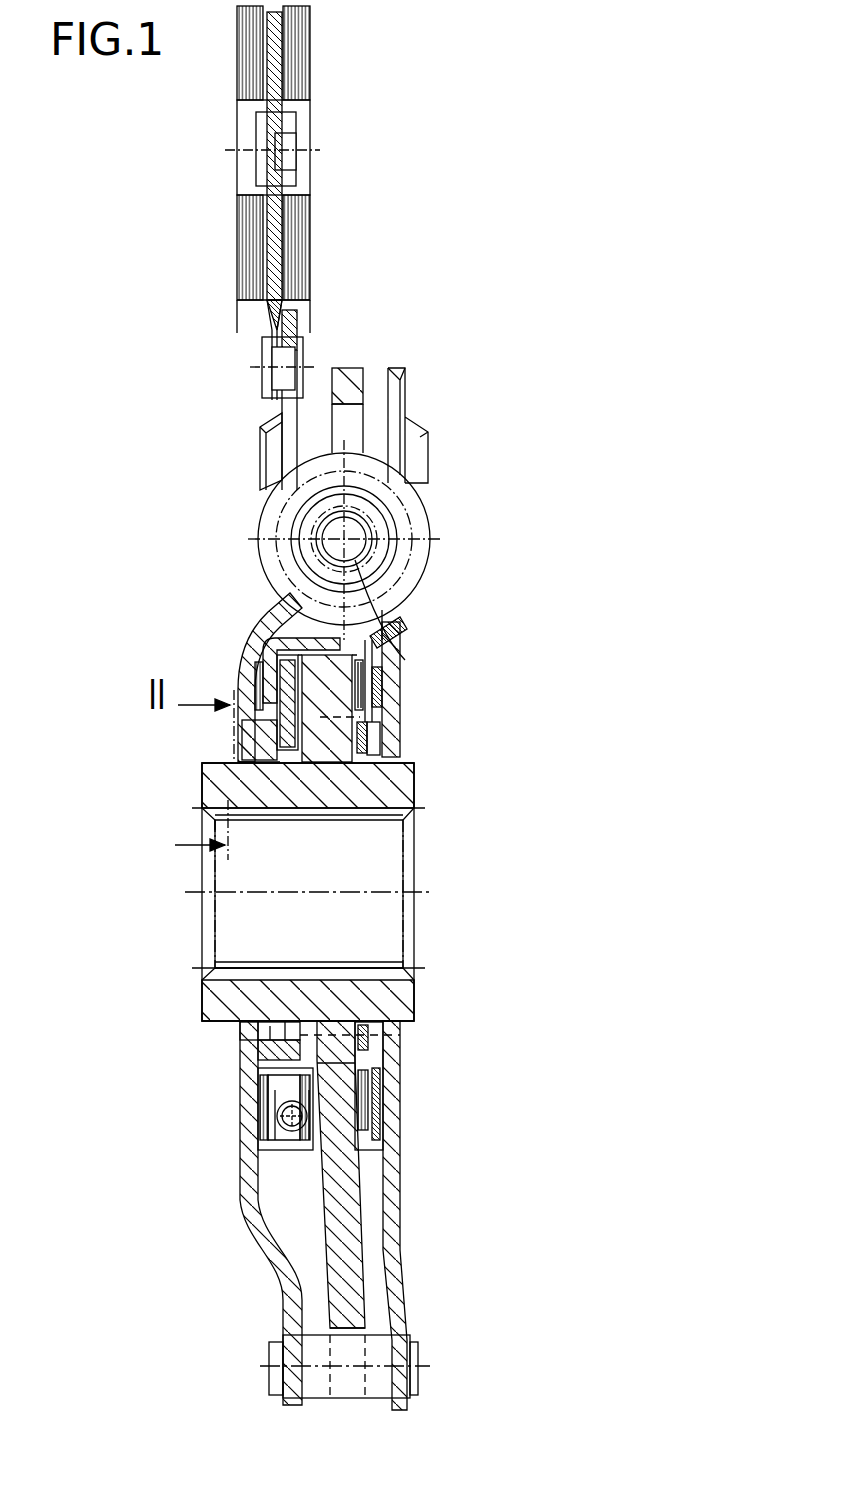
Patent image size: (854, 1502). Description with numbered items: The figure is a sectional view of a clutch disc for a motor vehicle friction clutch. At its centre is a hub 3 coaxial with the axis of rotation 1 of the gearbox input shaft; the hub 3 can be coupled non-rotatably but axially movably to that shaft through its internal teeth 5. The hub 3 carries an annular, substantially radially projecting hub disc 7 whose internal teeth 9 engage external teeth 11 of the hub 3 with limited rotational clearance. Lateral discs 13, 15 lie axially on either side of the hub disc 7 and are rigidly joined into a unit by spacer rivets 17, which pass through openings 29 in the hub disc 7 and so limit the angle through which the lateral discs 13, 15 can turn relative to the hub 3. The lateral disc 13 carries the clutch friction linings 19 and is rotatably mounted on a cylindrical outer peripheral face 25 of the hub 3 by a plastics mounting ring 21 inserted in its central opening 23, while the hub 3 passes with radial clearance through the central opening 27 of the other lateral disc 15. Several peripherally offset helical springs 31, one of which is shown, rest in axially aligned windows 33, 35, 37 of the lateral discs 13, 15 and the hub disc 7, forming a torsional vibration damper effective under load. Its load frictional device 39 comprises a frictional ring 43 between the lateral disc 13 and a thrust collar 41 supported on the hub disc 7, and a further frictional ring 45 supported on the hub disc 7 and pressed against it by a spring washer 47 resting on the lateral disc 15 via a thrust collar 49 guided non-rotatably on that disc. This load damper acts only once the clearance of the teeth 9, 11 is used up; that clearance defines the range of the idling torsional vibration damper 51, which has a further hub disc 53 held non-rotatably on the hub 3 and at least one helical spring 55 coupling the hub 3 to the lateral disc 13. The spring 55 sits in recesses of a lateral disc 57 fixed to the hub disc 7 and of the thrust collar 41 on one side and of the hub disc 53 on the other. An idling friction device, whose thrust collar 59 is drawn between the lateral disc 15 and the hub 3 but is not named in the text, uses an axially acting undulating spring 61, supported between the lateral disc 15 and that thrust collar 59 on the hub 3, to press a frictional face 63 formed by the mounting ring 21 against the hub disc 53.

The axis of rotation 1 is at (185, 890).
The hub 3 is at (400, 780).
The internal teeth 5 is at (400, 815).
The hub disc 7 is at (355, 375).
The internal teeth 9 is at (347, 765).
The external teeth 11 is at (315, 770).
The lateral disc 13 is at (262, 1257).
The lateral disc 15 is at (400, 1230).
The spacer rivets 17 is at (385, 1350).
The clutch friction linings 19 is at (305, 235).
The plastics mounting ring 21 is at (238, 1035).
The central opening 23 is at (255, 1070).
The cylindrical outer peripheral face 25 is at (215, 760).
The central opening 27 is at (400, 750).
The openings 29 is at (340, 1330).
The helical springs 31 is at (420, 512).
The window 33 is at (270, 585).
The window 35 is at (370, 622).
The window 37 is at (395, 528).
The load frictional device 39 is at (415, 654).
The thrust collar 41 is at (283, 660).
The frictional ring 43 is at (250, 668).
The frictional ring 45 is at (380, 690).
The spring washer 47 is at (378, 703).
The thrust collar 49 is at (410, 625).
The torsional vibration damper 51 is at (233, 1118).
The hub disc 53 is at (262, 645).
The helical spring 55 is at (265, 1110).
The lateral disc 57 is at (300, 1150).
The friction lining 59 is at (385, 1073).
The undulating spring 61 is at (385, 1042).
The frictional face 63 is at (290, 762).